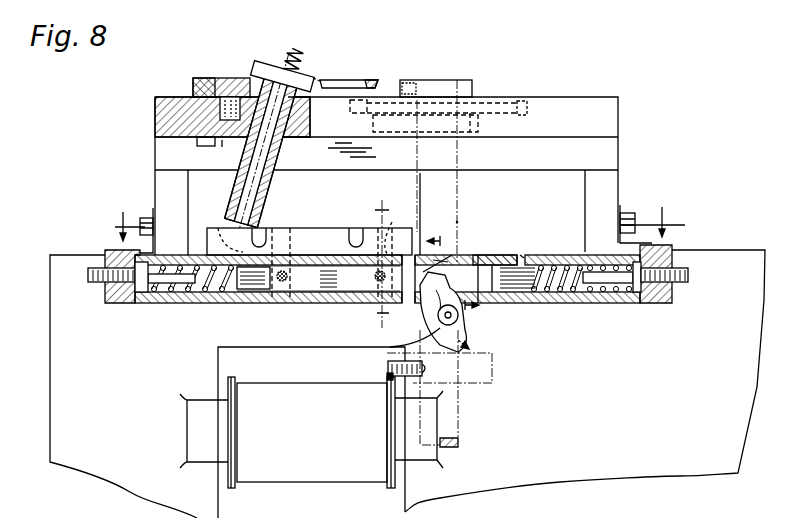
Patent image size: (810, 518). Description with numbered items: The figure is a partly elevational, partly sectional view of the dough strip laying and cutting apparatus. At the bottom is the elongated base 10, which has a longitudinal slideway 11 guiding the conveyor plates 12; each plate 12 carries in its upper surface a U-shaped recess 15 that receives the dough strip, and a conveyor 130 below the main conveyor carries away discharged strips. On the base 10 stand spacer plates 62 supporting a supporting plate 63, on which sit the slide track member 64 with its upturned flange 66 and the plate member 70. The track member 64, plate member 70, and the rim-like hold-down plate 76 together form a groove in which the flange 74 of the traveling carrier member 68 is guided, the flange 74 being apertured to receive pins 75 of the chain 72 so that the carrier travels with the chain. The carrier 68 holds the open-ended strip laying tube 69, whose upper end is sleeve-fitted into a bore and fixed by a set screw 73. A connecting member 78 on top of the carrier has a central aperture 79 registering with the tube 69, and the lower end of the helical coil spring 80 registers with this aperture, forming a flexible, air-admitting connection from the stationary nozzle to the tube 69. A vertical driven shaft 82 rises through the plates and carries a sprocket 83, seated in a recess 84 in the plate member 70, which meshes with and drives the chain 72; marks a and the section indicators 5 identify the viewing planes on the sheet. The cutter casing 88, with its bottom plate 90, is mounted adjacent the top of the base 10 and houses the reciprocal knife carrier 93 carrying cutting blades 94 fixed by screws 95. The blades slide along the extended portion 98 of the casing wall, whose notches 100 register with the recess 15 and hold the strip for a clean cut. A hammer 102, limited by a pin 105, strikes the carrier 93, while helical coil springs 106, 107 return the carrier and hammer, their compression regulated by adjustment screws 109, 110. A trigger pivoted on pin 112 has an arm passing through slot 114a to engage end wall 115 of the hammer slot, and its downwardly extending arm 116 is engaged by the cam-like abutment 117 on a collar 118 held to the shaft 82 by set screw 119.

The base 10 is at (731, 250).
The spacer plates 62 is at (150, 178).
The supporting plate 63 is at (526, 165).
The slide track member 64 is at (196, 124).
The upturned flange 66 is at (210, 126).
The carrier member 68 is at (305, 118).
The strip laying tube 69 is at (284, 157).
The plate member 70 is at (155, 116).
The chain 72 is at (220, 108).
The set screw 73 is at (301, 138).
The flange 74 is at (229, 78).
The pins 75 is at (222, 144).
The hold-down plate 76 is at (195, 87).
The connecting member 78 is at (251, 54).
The central aperture 79 is at (316, 76).
The helical coil spring 80 is at (260, 36).
The vertical driven shaft 82 is at (458, 194).
The sprocket 83 is at (498, 100).
The recess 84 is at (528, 106).
The casing 88 is at (647, 303).
The bottom plate 90 is at (334, 303).
The carrier member 93 is at (261, 294).
The cutting blades 94 is at (302, 230).
The screws 95 is at (288, 277).
The extended portion 98 is at (208, 243).
The notches 100 is at (258, 240).
The hammer 102 is at (492, 285).
The pin 105 is at (522, 256).
The helical coil spring 106 is at (173, 290).
The helical coil spring 107 is at (581, 288).
The adjustment screw 109 is at (97, 285).
The adjustment screw 110 is at (682, 281).
The pin 112 is at (455, 290).
The slot 114a is at (445, 268).
The end wall 115 is at (449, 292).
The downwardly extending arm 116 is at (394, 349).
The cam-like abutment 117 is at (469, 343).
The collar 118 is at (495, 367).
The set screw 119 is at (458, 391).
The conveyor 130 is at (261, 484).
The section line 5 is at (400, 221).
The slideway 11 is at (460, 280).
The plates 12 is at (382, 259).
The U-shaped recess 15 is at (216, 230).
The axis a is at (452, 215).